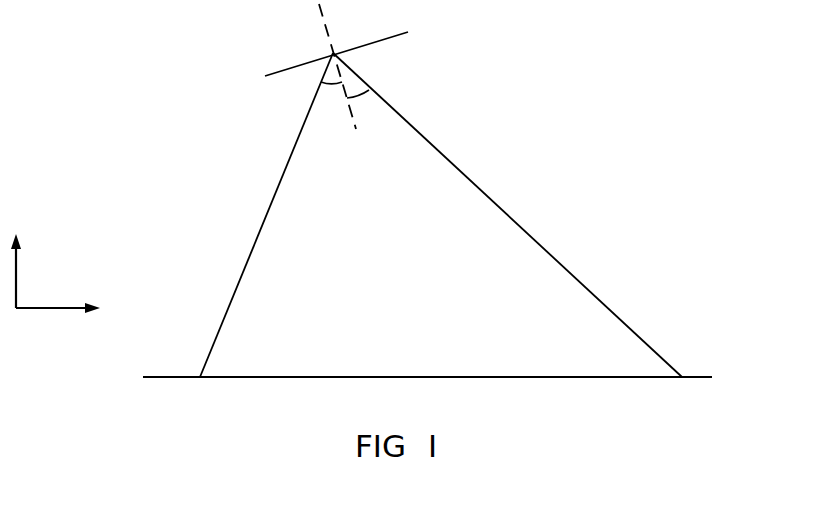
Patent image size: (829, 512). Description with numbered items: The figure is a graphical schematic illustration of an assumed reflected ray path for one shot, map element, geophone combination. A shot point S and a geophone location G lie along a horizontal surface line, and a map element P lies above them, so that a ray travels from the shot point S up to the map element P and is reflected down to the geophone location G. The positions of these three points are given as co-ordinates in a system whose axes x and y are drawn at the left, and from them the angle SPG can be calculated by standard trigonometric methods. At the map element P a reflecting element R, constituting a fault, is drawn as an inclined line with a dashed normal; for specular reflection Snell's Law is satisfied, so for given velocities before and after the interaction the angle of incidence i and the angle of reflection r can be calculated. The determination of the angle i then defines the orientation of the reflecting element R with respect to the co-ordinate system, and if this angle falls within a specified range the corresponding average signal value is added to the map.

The shot point S is at (236, 233).
The geophone location G is at (526, 233).
The map element P is at (337, 66).
The reflecting element R is at (431, 2).
The angle of incidence i is at (331, 100).
The angle of reflection r is at (359, 104).
The x co-ordinate axis x is at (67, 308).
The y co-ordinate axis y is at (17, 255).